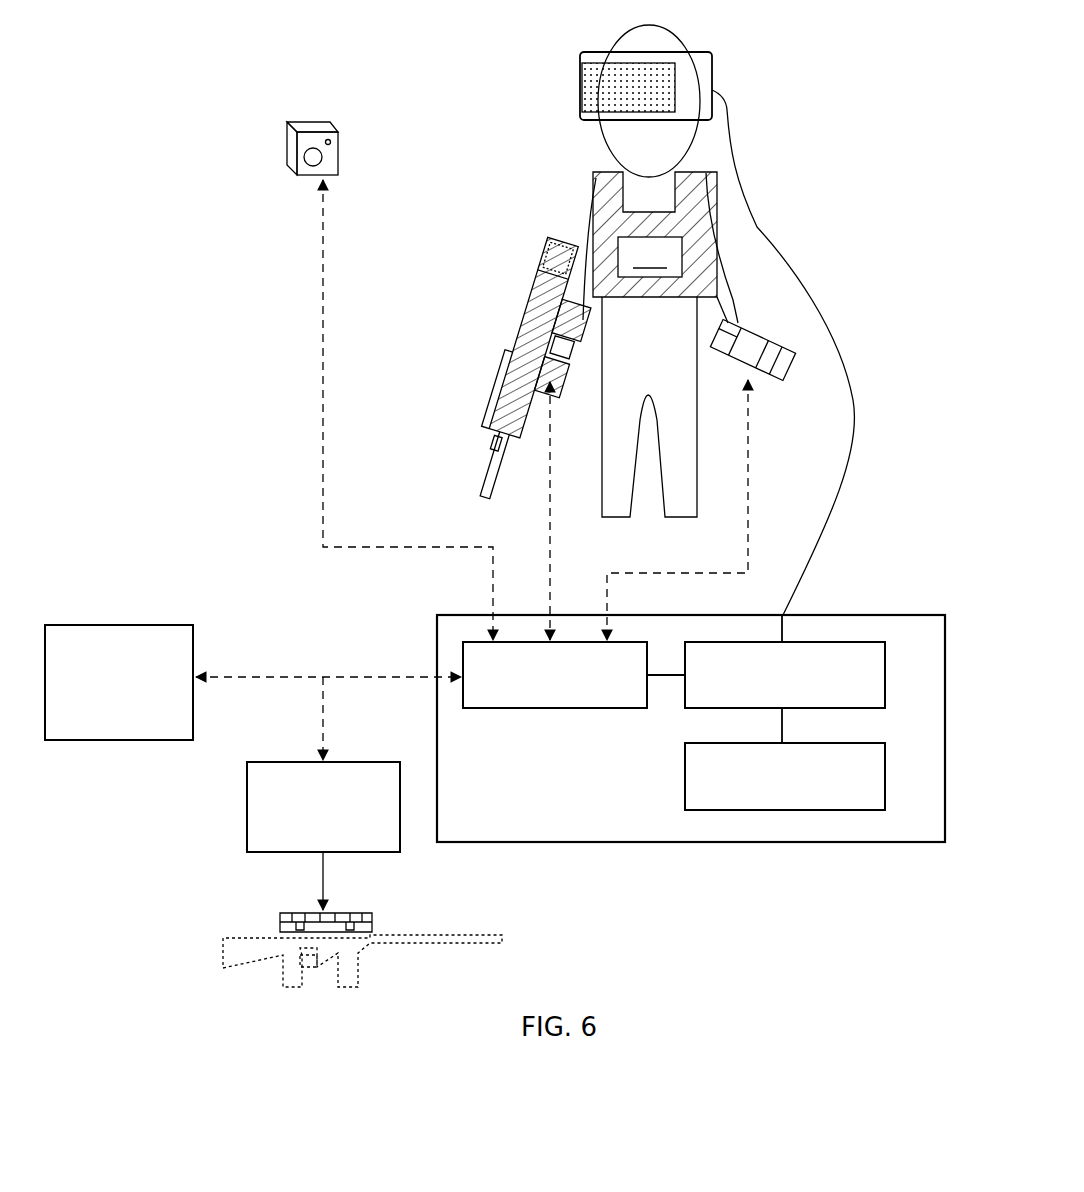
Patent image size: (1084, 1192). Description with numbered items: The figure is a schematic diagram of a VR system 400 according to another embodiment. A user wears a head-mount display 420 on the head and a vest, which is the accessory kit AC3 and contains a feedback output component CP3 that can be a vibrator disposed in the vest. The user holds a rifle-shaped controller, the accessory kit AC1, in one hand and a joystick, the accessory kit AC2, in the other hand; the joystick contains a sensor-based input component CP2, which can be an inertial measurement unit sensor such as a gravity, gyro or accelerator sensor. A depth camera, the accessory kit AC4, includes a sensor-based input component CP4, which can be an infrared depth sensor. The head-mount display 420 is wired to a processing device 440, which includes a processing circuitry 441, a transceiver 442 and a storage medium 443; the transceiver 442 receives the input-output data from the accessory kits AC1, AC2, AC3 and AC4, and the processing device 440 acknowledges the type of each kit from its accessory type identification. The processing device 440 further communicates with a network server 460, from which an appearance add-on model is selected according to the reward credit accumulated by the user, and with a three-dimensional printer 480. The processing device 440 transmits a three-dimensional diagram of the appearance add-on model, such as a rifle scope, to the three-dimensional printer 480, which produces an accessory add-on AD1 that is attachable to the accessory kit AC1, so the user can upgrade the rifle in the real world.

The VR system 400 is at (912, 61).
The head-mount display 420 is at (578, 90).
The processing device 440 is at (700, 704).
The processing circuitry 441 is at (700, 708).
The transceiver 442 is at (568, 708).
The storage medium 443 is at (685, 790).
The network server 460 is at (148, 743).
The 3D printer 480 is at (275, 855).
The accessory kit AC1 is at (501, 373).
The accessory kit AC2 is at (777, 377).
The accessory kit AC3 is at (600, 178).
The accessory kit AC4 is at (302, 122).
The sensor-based input component CP2 is at (758, 332).
The feedback output component CP3 is at (650, 257).
The sensor-based input component CP4 is at (322, 153).
The accessory add-on AD1 is at (345, 913).